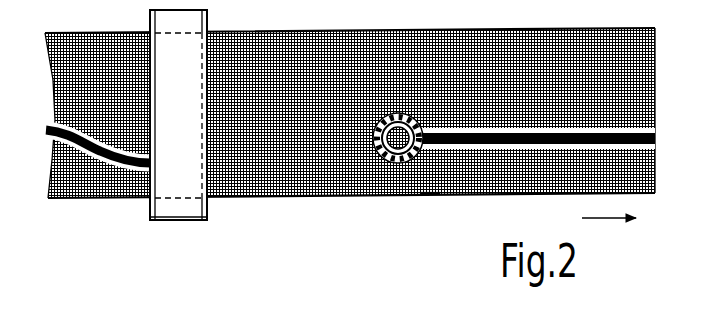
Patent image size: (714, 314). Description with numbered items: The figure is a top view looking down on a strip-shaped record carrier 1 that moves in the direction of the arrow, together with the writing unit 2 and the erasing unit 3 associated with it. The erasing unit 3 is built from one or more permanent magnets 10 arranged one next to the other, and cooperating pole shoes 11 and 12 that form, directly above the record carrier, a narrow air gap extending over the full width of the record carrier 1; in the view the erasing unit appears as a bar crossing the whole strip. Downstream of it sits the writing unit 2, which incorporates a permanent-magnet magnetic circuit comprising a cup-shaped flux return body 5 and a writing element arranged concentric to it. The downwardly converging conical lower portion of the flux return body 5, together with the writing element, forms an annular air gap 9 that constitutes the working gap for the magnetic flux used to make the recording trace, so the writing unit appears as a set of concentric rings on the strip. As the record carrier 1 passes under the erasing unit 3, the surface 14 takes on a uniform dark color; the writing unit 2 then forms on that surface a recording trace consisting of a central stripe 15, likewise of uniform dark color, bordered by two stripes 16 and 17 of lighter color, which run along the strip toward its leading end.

The record carrier 1 is at (511, 194).
The writing unit 2 is at (432, 232).
The erasing unit 3 is at (188, 142).
The cup-shaped flux return body 5 is at (413, 160).
The annular air gap 9 is at (399, 160).
The permanent magnet 10 is at (178, 221).
The pole shoe 11 is at (207, 211).
The pole shoe 12 is at (150, 214).
The surface of record carrier 14 is at (644, 66).
The central stripe 15 is at (652, 140).
The lighter stripe 16 is at (642, 127).
The lighter stripe 17 is at (638, 150).